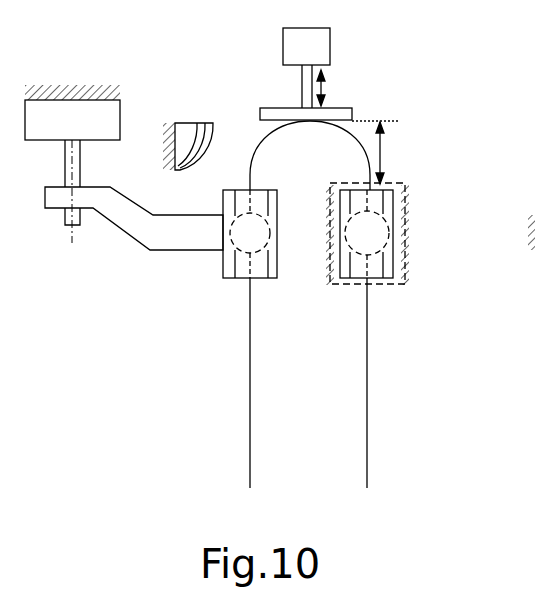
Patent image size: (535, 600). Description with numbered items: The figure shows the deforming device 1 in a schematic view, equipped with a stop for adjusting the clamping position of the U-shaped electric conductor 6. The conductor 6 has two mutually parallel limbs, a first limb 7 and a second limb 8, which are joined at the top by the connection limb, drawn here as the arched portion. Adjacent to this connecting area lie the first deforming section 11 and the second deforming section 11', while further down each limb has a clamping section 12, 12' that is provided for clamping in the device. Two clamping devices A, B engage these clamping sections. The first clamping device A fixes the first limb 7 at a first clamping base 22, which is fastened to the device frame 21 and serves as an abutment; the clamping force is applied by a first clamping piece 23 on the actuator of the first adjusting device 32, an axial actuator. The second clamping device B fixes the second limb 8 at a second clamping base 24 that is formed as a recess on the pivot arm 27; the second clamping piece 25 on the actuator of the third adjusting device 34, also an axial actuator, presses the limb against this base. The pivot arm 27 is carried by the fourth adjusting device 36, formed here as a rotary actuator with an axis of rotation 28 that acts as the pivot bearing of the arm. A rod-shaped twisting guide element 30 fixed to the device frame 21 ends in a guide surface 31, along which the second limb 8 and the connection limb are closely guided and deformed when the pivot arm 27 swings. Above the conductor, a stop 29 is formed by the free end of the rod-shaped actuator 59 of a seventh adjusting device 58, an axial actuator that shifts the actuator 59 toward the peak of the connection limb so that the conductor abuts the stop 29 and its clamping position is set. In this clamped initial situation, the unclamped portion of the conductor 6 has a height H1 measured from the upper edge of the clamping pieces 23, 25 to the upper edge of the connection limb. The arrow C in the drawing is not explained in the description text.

The deforming device 1 is at (130, 333).
The electric conductor 6 is at (238, 443).
The first limb 7 is at (368, 403).
The second limb 8 is at (250, 402).
The first deforming section 11 is at (310, 155).
The second deforming section 11' is at (213, 188).
The clamping section 12 is at (338, 301).
The clamping section 12' is at (281, 299).
The device frame 21 is at (357, 286).
The first clamping base 22 is at (388, 266).
The first clamping piece 23 is at (375, 280).
The second clamping base 24 is at (222, 263).
The second clamping piece 25 is at (240, 278).
The pivot arm 27 is at (123, 238).
The axis of rotation 28 is at (66, 240).
The stop 29 is at (352, 113).
The twisting guide element 30 is at (185, 123).
The guide surface 31 is at (213, 147).
The first adjusting device 32 is at (366, 234).
The third adjusting device 34 is at (250, 234).
The fourth adjusting device 36 is at (72, 112).
The seventh adjusting device 58 is at (306, 46).
The actuator 59 is at (302, 92).
The first clamping device A is at (422, 294).
The second clamping device B is at (262, 305).
The direction C is at (462, 91).
The height H1 is at (383, 156).